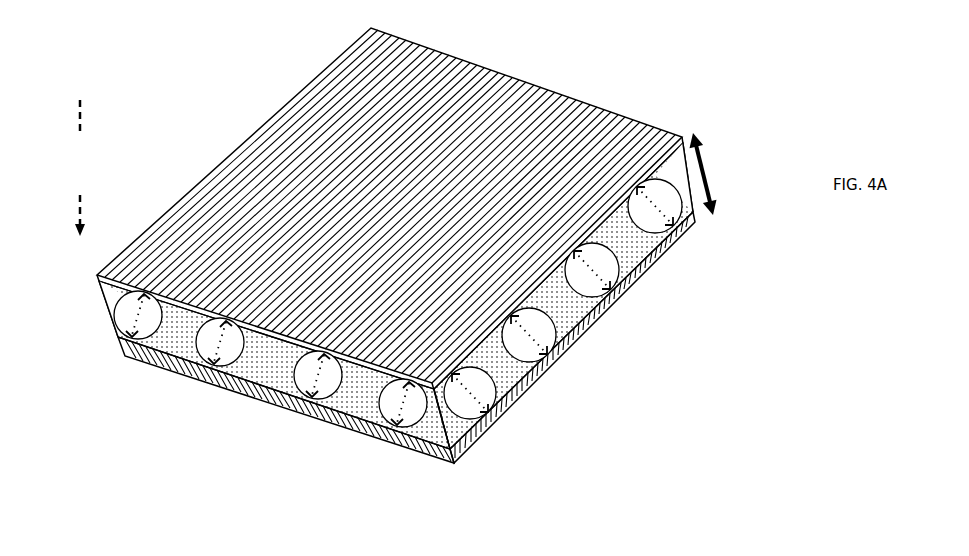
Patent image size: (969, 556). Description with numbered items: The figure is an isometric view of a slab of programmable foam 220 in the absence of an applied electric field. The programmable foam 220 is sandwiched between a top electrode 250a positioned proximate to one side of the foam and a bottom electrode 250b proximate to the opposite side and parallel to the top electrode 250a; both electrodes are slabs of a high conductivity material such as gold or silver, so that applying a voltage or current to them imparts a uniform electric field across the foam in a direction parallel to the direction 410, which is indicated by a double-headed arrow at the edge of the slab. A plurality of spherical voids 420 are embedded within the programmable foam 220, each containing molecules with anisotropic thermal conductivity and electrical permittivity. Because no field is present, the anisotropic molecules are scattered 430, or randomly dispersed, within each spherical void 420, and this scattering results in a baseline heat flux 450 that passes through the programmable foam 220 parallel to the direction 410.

The top electrode 250a is at (281, 108).
The bottom electrode 250b is at (126, 352).
The programmable foam 220 is at (263, 370).
The spherical voids 420 is at (329, 400).
The scattered anisotropic molecules 430 is at (400, 403).
The direction 410 is at (705, 180).
The baseline heat flux 450 is at (77, 101).